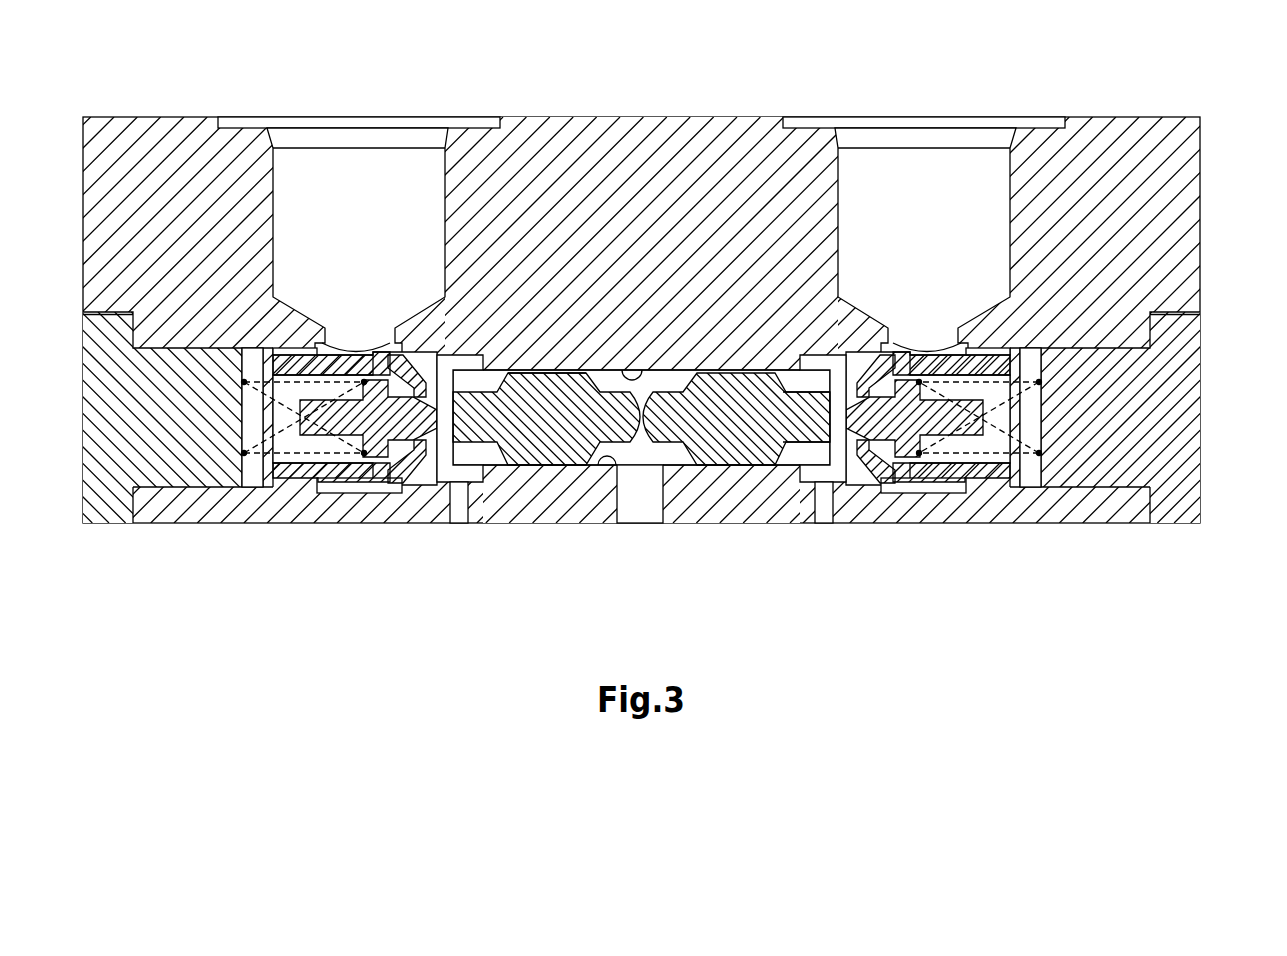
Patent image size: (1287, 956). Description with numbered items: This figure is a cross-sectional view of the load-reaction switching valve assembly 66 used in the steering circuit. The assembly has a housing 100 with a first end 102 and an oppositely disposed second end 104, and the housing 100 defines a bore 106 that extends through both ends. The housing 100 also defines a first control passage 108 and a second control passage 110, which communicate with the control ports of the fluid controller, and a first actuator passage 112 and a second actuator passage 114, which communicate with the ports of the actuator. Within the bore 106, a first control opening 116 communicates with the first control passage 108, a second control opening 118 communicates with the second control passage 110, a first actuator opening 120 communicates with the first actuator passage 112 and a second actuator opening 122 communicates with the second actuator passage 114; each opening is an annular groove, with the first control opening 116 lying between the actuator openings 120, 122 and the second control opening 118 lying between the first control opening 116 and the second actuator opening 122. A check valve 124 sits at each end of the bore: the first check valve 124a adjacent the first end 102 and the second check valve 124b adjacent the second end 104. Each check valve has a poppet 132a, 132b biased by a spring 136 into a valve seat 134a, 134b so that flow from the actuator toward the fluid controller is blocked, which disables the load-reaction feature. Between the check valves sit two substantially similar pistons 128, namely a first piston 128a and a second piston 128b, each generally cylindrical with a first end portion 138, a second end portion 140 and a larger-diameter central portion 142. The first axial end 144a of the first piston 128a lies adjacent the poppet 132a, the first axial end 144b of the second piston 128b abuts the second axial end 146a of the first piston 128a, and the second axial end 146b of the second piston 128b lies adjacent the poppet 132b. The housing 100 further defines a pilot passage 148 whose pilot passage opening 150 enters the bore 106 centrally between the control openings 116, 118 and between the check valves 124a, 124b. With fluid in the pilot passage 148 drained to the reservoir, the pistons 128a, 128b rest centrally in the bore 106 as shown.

The load-reaction switching valve assembly 66 is at (158, 100).
The housing 100 is at (1122, 104).
The first end 102 is at (82, 205).
The second end 104 is at (1200, 205).
The bore 106 is at (645, 368).
The first control passage 108 is at (459, 518).
The second control passage 110 is at (823, 500).
The first actuator passage 112 is at (325, 335).
The second actuator passage 114 is at (956, 345).
The first control opening 116 is at (462, 350).
The second control opening 118 is at (808, 352).
The first actuator opening 120 is at (384, 495).
The second actuator opening 122 is at (950, 483).
The check valve 124 is at (632, 435).
The first check valve 124a is at (632, 432).
The second check valve 124b is at (632, 435).
The piston 128 is at (637, 496).
The first piston 128a is at (538, 470).
The second piston 128b is at (736, 470).
The poppet of the first check valve 132a is at (366, 477).
The poppet of the second check valve 132b is at (858, 475).
The valve seat of the first check valve 134a is at (405, 365).
The valve seat of the second check valve 134b is at (874, 350).
The spring 136 is at (258, 460).
The first end portion 138 is at (487, 352).
The second end portion 140 is at (626, 378).
The central portion 142 is at (547, 372).
The first axial end of the first piston 144a is at (447, 462).
The first axial end of the second piston 144b is at (647, 460).
The second axial end of the first piston 146a is at (688, 392).
The second axial end of the second piston 146b is at (825, 392).
The pilot passage 148 is at (633, 502).
The pilot passage opening 150 is at (605, 468).